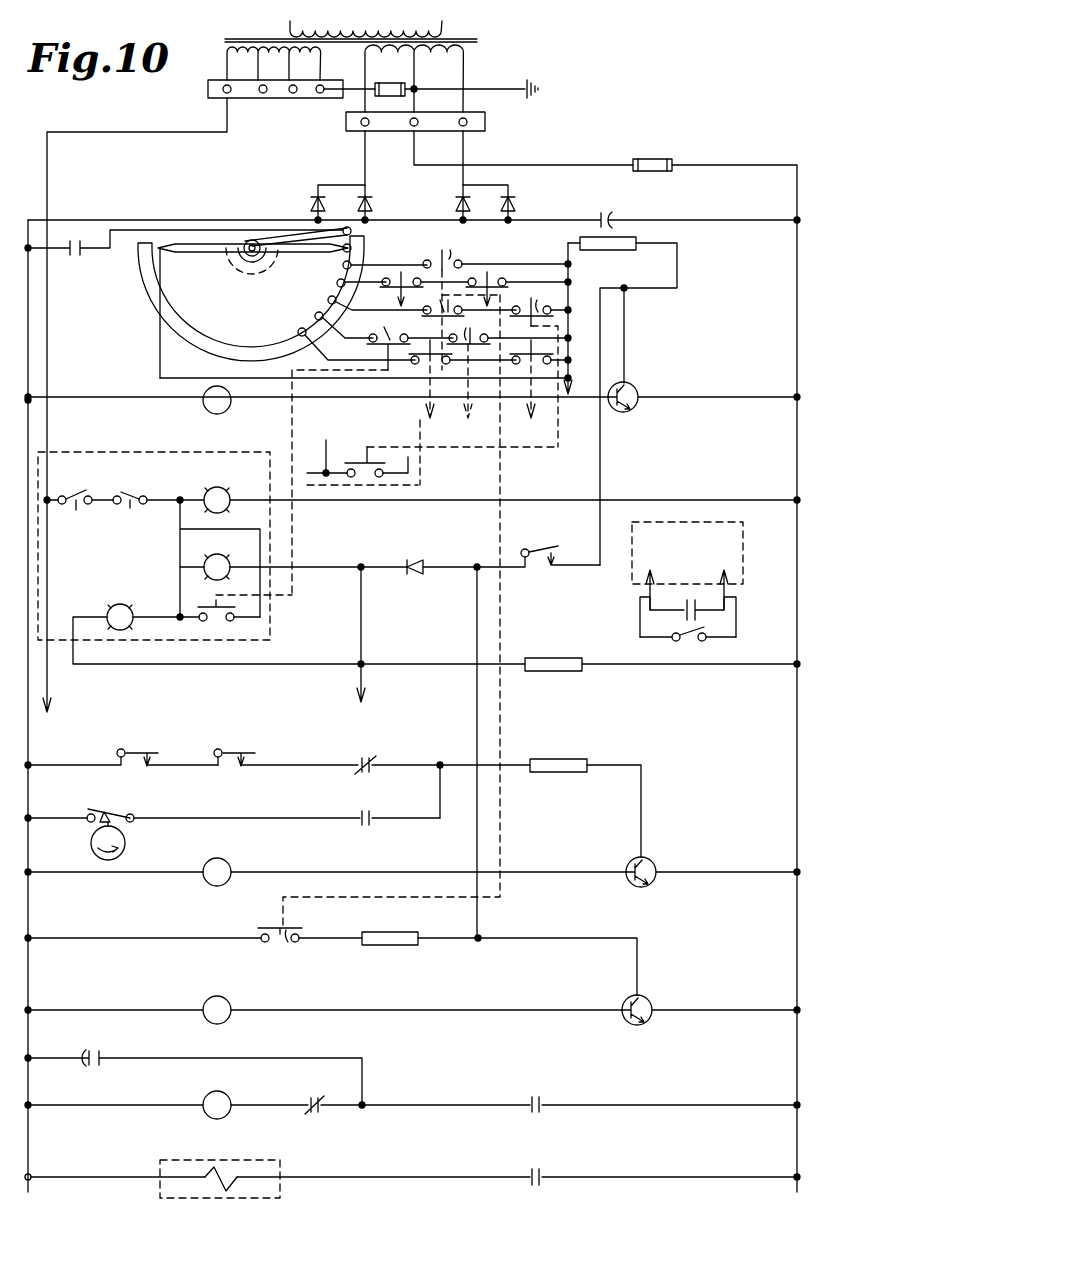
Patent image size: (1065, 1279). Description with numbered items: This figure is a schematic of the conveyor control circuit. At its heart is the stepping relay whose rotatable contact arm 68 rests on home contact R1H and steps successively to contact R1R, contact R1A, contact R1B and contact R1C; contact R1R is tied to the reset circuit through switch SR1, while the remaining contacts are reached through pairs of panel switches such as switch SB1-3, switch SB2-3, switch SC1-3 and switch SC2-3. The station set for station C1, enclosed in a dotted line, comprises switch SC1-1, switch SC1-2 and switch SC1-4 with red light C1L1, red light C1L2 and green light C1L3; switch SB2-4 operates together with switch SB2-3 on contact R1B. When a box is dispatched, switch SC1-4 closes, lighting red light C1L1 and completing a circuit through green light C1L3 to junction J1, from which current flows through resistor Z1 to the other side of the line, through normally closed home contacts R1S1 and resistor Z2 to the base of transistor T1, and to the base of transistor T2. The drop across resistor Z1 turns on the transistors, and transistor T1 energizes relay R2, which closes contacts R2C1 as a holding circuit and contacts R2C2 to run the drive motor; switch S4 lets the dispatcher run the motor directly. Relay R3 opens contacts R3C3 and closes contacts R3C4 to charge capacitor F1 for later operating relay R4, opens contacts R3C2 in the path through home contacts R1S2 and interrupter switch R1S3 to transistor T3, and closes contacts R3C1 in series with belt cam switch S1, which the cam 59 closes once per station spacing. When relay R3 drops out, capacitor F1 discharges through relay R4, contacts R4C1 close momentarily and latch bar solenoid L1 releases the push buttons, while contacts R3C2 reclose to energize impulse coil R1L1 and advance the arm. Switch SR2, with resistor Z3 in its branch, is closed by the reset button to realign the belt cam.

The contacts R2C1 is at (92, 253).
The contact R1H is at (178, 252).
The rotatable contact arm 68 is at (228, 258).
The contact R1R is at (343, 265).
The contact R1A is at (337, 283).
The contact R1B is at (328, 300).
The contact R1C is at (315, 317).
The switch SR1 is at (444, 244).
The switch SB1-3 is at (399, 607).
The switch SB2-3 is at (533, 288).
The switch SC1-3 is at (382, 322).
The switch SC2-3 is at (507, 366).
The resistor Z2 is at (600, 252).
The transistor T1 is at (632, 388).
The relay R2 is at (214, 414).
The red light C1L1 is at (236, 478).
The switch SC1-1 is at (76, 510).
The switch SC1-2 is at (130, 520).
The green light C1L3 is at (236, 545).
The red light C1L2 is at (139, 595).
The switch SC1-4 is at (212, 622).
The switch SB2-4 is at (370, 478).
The junction J1 is at (477, 567).
The switch R1S1 is at (538, 547).
The contacts R2C2 is at (668, 625).
The switch S4 is at (693, 646).
The resistor Z1 is at (540, 658).
The switch R1S2 is at (142, 742).
The interrupter switch R1S3 is at (239, 742).
The contacts R3C2 is at (392, 750).
The contacts R3C1 is at (390, 802).
The switch S1 is at (194, 806).
The cam 59 is at (125, 843).
The impulse coil R1L1 is at (226, 861).
The transistor T3 is at (652, 862).
The resistor Z3 is at (376, 932).
The switch SR2 is at (281, 951).
The transistor T2 is at (648, 1000).
The relay R3 is at (224, 1022).
The capacitor F1 is at (84, 1072).
The relay R4 is at (227, 1094).
The contacts R3C3 is at (302, 1118).
The contacts R3C4 is at (541, 1110).
The latch bar solenoid L1 is at (235, 1172).
The contacts R4C1 is at (544, 1170).